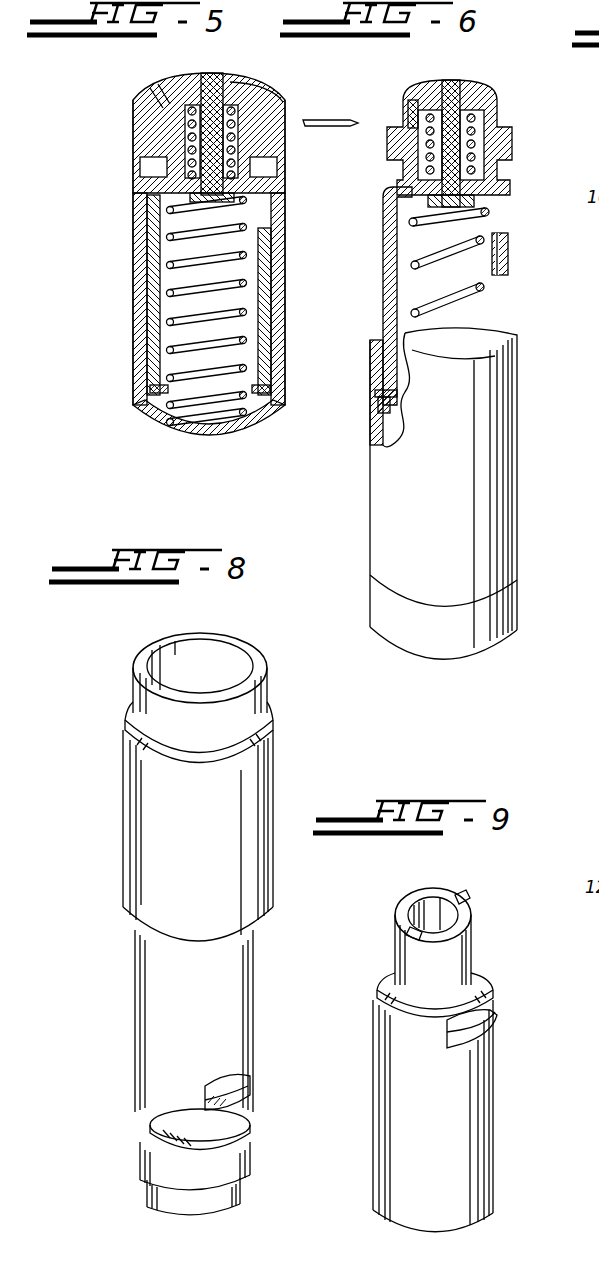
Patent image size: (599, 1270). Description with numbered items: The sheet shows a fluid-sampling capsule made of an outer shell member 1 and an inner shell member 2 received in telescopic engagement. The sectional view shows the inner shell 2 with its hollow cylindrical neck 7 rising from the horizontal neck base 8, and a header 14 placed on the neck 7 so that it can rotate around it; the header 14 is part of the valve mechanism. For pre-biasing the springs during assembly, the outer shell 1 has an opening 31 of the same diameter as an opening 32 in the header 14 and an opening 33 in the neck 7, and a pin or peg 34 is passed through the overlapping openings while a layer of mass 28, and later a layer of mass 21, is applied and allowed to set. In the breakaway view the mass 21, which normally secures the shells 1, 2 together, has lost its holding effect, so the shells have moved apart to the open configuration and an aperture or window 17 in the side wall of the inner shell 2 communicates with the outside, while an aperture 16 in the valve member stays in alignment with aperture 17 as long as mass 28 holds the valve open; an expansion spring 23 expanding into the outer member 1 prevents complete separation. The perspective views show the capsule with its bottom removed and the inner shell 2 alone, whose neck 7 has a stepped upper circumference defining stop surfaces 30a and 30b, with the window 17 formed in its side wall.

In FIG. 6, the outer shell member 1 is at (482, 388).
In FIG. 8, the outer shell member 1 is at (160, 763).
In FIG. 8, the inner shell member 2 is at (138, 1000).
In FIG. 9, the inner shell member 2 is at (455, 1135).
In FIG. 8, the neck 7 is at (168, 1128).
In FIG. 9, the neck 7 is at (462, 945).
In FIG. 9, the base of the neck 8 is at (378, 985).
In FIG. 8, the header 14 is at (228, 1163).
In FIG. 6, the aperture 16 is at (494, 224).
In FIG. 6, the aperture or window 17 is at (503, 211).
In FIG. 8, the aperture or window 17 is at (246, 1080).
In FIG. 9, the aperture or window 17 is at (470, 1030).
In FIG. 5, the mass 21 is at (162, 90).
In FIG. 6, the expansion spring 23 is at (378, 394).
In FIG. 6, the mass 28 is at (503, 180).
In FIG. 9, the stop surface 30a is at (465, 903).
In FIG. 9, the stop surface 30b is at (420, 933).
In FIG. 5, the opening 31 is at (288, 110).
In FIG. 5, the opening 32 is at (266, 113).
In FIG. 5, the opening 33 is at (242, 112).
In FIG. 5, the pin (peg) 34 is at (308, 127).